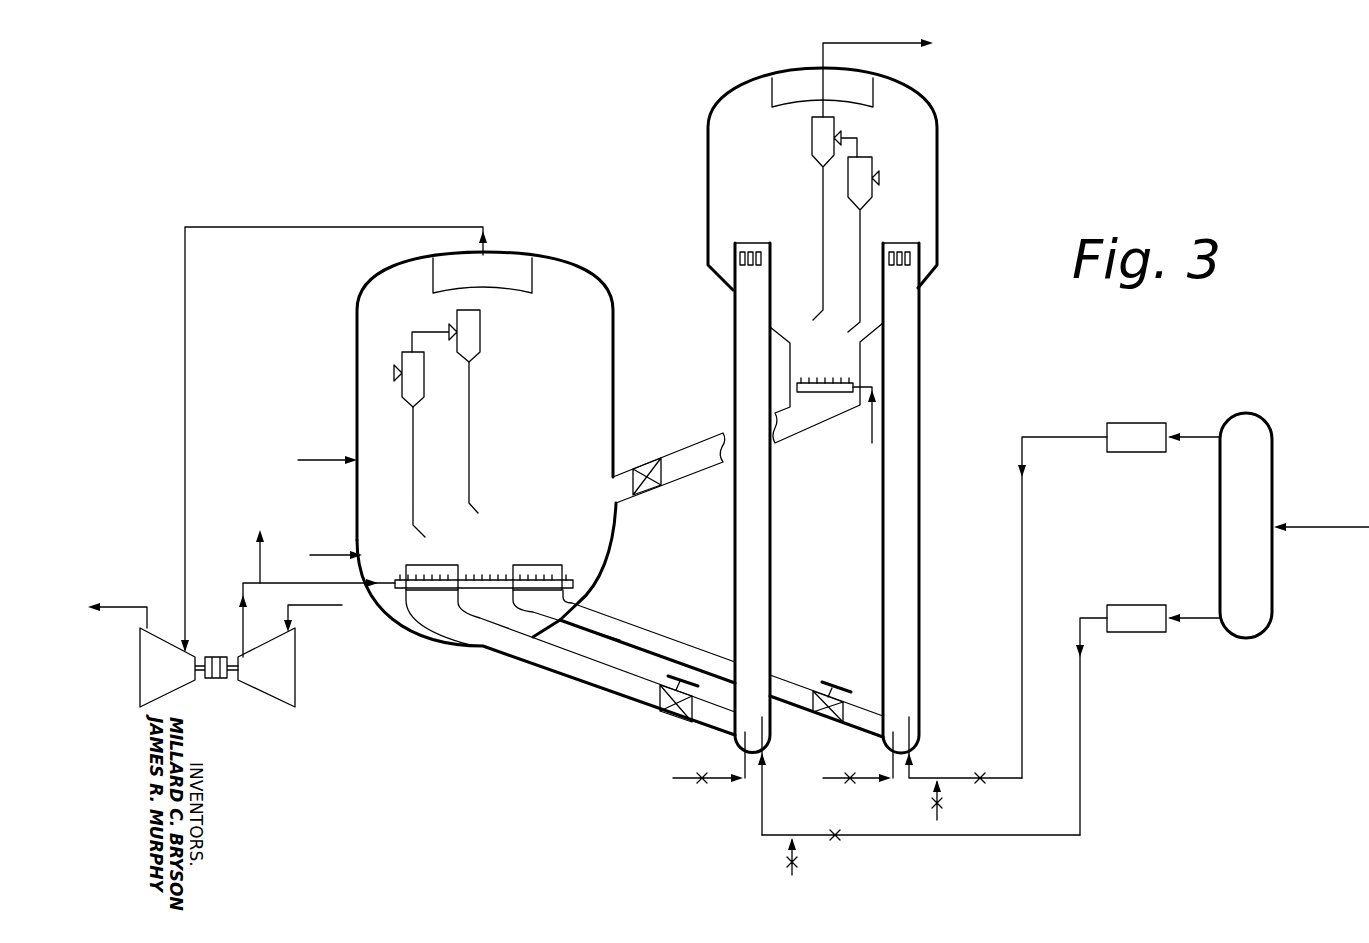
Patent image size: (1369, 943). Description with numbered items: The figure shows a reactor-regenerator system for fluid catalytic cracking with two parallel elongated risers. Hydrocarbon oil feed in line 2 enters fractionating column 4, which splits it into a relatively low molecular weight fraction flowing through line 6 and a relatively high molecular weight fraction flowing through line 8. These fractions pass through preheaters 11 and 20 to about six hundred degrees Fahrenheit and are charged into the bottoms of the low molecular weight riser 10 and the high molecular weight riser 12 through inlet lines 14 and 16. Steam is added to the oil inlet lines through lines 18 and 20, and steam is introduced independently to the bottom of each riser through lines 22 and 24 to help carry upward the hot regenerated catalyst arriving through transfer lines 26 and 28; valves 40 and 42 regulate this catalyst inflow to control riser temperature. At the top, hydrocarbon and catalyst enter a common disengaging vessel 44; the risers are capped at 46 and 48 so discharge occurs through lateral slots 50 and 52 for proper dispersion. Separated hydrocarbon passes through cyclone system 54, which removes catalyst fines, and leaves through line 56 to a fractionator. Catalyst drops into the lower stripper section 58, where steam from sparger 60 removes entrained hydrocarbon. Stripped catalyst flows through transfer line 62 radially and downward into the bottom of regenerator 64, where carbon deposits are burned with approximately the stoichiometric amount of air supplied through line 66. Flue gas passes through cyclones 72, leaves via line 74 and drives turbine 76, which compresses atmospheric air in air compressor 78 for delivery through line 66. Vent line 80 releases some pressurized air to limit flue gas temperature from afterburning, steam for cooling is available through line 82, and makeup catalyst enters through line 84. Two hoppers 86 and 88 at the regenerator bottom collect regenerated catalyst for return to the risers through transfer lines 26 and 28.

The feed line 2 is at (1322, 527).
The fractionating column 4 is at (1272, 450).
The low molecular weight fraction line 6 is at (1200, 437).
The high molecular weight fraction line 8 is at (1205, 618).
The low molecular weight riser 10 is at (883, 550).
The preheater 11 is at (1135, 423).
The high molecular weight riser 12 is at (735, 530).
The oil inlet line 14 is at (958, 778).
The oil inlet line 16 is at (965, 838).
The steam line 18 is at (943, 800).
The preheater and steam line 20 is at (787, 850).
The steam line 22 is at (870, 780).
The steam line 24 is at (717, 780).
The catalyst transfer line 26 is at (645, 622).
The catalyst transfer line 28 is at (623, 704).
The catalyst valve 40 is at (672, 678).
The catalyst valve 42 is at (835, 680).
The disengaging vessel 44 is at (938, 164).
The riser cap 46 is at (908, 243).
The riser cap 48 is at (760, 243).
The lateral slots 50 is at (893, 243).
The lateral slots 52 is at (763, 262).
The cyclone system 54 is at (882, 158).
The product line 56 is at (898, 45).
The stripper section 58 is at (862, 363).
The sparger 60 is at (826, 378).
The transfer line 62 is at (694, 445).
The regenerator 64 is at (613, 347).
The air line 66 is at (315, 583).
The regenerator cyclones 72 is at (488, 356).
The flue gas line 74 is at (392, 227).
The turbine 76 is at (185, 690).
The air compressor 78 is at (276, 702).
The vent line 80 is at (258, 563).
The steam line 82 is at (330, 460).
The makeup catalyst line 84 is at (337, 555).
The hopper 86 is at (548, 565).
The hopper 88 is at (436, 565).